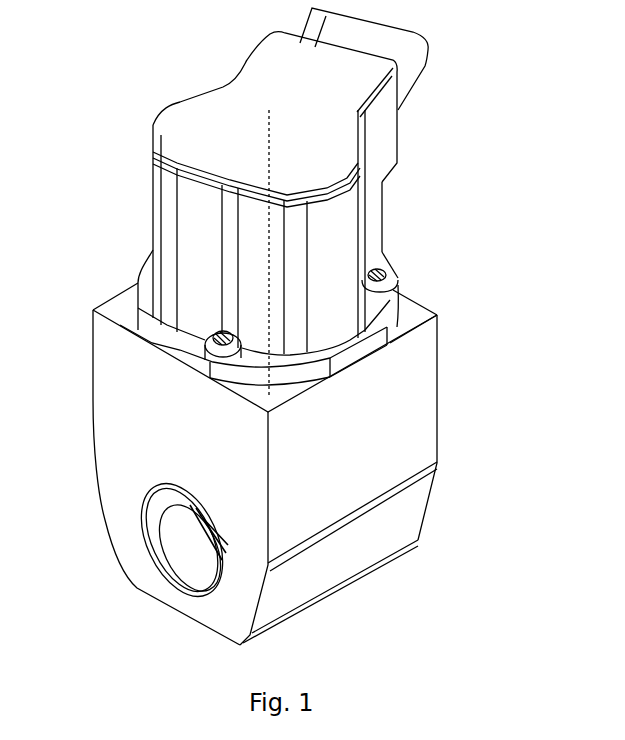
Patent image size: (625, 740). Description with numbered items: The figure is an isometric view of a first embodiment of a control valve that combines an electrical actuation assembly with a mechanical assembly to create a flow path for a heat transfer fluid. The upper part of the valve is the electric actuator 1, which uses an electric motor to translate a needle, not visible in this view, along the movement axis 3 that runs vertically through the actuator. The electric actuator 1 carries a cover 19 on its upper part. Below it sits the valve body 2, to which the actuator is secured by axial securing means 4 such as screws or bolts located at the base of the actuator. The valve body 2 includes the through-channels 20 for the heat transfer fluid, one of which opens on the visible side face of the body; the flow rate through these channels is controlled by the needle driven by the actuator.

The electric actuator 1 is at (340, 237).
The valve body 2 is at (363, 425).
The movement axis 3 is at (272, 145).
The axial securing means 4 is at (398, 282).
The cover 19 is at (210, 125).
The through-channels 20 is at (180, 548).